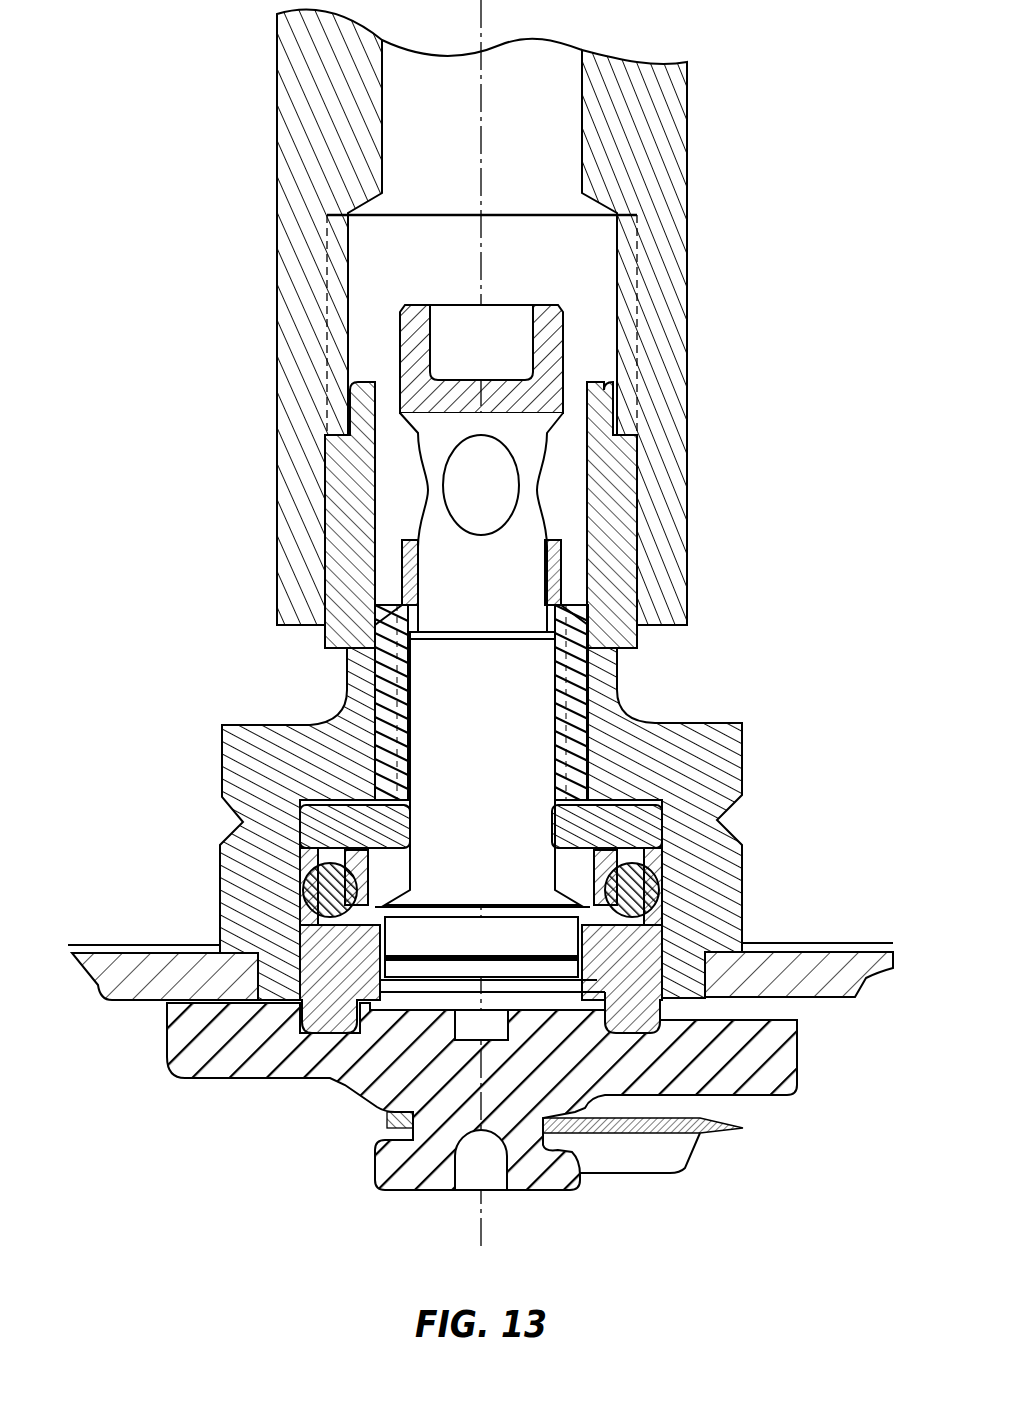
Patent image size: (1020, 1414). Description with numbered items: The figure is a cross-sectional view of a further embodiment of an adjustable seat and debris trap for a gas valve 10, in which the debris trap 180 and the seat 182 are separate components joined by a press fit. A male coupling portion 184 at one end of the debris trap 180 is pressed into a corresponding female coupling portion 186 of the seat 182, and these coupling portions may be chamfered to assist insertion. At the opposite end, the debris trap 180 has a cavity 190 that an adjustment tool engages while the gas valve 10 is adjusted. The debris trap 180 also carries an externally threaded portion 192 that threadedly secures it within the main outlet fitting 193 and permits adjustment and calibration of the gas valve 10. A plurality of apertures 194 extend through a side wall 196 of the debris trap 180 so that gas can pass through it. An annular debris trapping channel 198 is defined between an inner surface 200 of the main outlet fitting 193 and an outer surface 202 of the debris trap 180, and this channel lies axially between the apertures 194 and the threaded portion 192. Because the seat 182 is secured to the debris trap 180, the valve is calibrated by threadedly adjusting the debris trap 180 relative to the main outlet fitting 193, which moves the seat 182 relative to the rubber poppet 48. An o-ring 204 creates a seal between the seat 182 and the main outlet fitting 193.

The gas valve 10 is at (826, 865).
The rubber poppet 48 is at (752, 1062).
The debris trap 180 is at (345, 566).
The seat 182 is at (258, 927).
The male coupling portion 184 is at (388, 837).
The female coupling portion 186 is at (300, 831).
The cavity 190 is at (459, 318).
The externally threaded portion 192 is at (620, 672).
The main outlet fitting 193 is at (640, 752).
The apertures 194 is at (500, 468).
The side wall 196 is at (555, 575).
The annular debris trapping channel 198 is at (375, 534).
The inner surface 200 is at (390, 512).
The outer surface 202 is at (383, 508).
The o-ring 204 is at (665, 848).